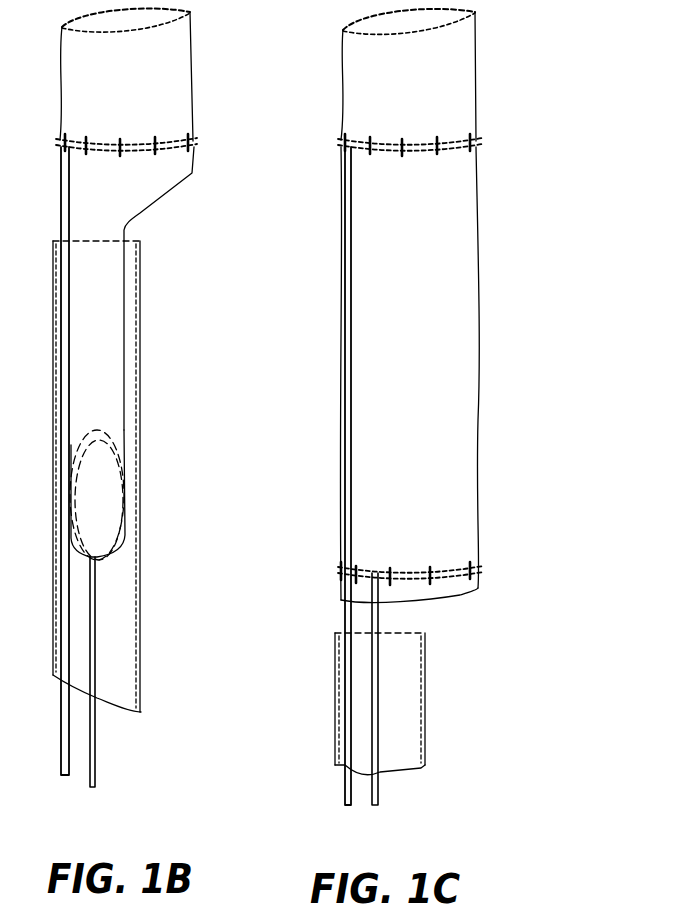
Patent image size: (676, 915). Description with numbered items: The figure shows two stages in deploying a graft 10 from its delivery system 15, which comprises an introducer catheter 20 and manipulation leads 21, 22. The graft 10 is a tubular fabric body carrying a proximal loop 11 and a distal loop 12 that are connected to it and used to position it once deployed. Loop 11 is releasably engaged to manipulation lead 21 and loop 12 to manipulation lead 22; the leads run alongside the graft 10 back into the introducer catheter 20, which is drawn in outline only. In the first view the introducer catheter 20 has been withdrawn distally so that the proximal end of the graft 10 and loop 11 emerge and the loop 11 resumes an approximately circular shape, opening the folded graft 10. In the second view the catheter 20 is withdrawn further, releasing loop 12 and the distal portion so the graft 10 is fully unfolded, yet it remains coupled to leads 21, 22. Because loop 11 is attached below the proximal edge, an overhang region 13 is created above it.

In FIG. 1B, the graft 10 is at (112, 328).
In FIG. 1C, the graft 10 is at (425, 349).
In FIG. 1B, the loop 11 is at (138, 141).
In FIG. 1C, the loop 11 is at (484, 142).
In FIG. 1B, the loop 12 is at (126, 494).
In FIG. 1C, the loop 12 is at (408, 570).
In FIG. 1B, the overhang region 13 is at (207, 10).
In FIG. 1C, the overhang region 13 is at (497, 10).
In FIG. 1B, the delivery system 15 is at (181, 262).
In FIG. 1C, the delivery system 15 is at (462, 639).
In FIG. 1B, the introducer catheter 20 is at (140, 640).
In FIG. 1C, the introducer catheter 20 is at (425, 665).
In FIG. 1B, the manipulation lead 21 is at (58, 183).
In FIG. 1C, the manipulation lead 21 is at (345, 790).
In FIG. 1B, the manipulation lead 22 is at (96, 748).
In FIG. 1C, the manipulation lead 22 is at (380, 790).